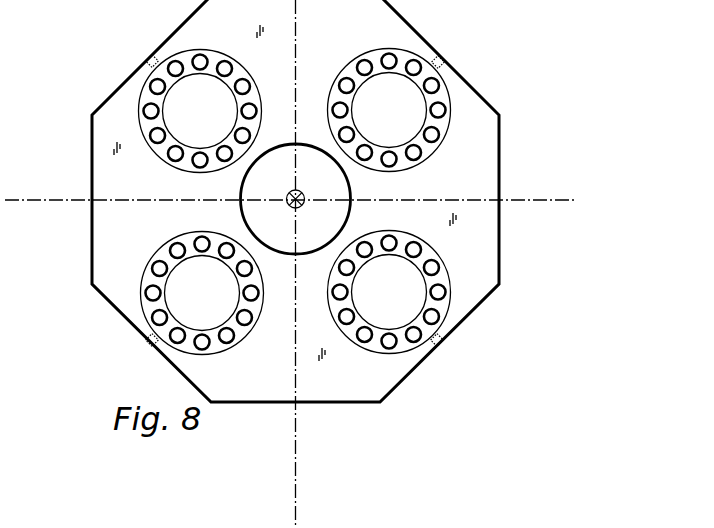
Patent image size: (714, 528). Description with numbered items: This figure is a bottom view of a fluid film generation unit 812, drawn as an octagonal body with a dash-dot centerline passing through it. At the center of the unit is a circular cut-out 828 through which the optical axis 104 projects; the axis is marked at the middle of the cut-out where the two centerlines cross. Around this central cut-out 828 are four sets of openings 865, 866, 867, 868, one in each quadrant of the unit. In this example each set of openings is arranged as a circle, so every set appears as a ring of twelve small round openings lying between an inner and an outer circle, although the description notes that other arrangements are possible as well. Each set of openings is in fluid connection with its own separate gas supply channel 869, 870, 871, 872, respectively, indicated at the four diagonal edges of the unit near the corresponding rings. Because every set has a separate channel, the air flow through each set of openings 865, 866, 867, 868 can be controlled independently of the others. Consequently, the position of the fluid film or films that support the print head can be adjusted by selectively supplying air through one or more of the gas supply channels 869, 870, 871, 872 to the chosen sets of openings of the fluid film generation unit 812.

The optical axis 104 is at (304, 197).
The fluid film generation unit 812 is at (115, 250).
The central bore 828 is at (245, 212).
The set of openings 865 is at (408, 42).
The set of openings 866 is at (469, 304).
The set of openings 867 is at (124, 303).
The set of openings 868 is at (122, 104).
The gas supply channel 869 is at (442, 60).
The gas supply channel 870 is at (441, 343).
The gas supply channel 871 is at (148, 343).
The gas supply channel 872 is at (148, 58).